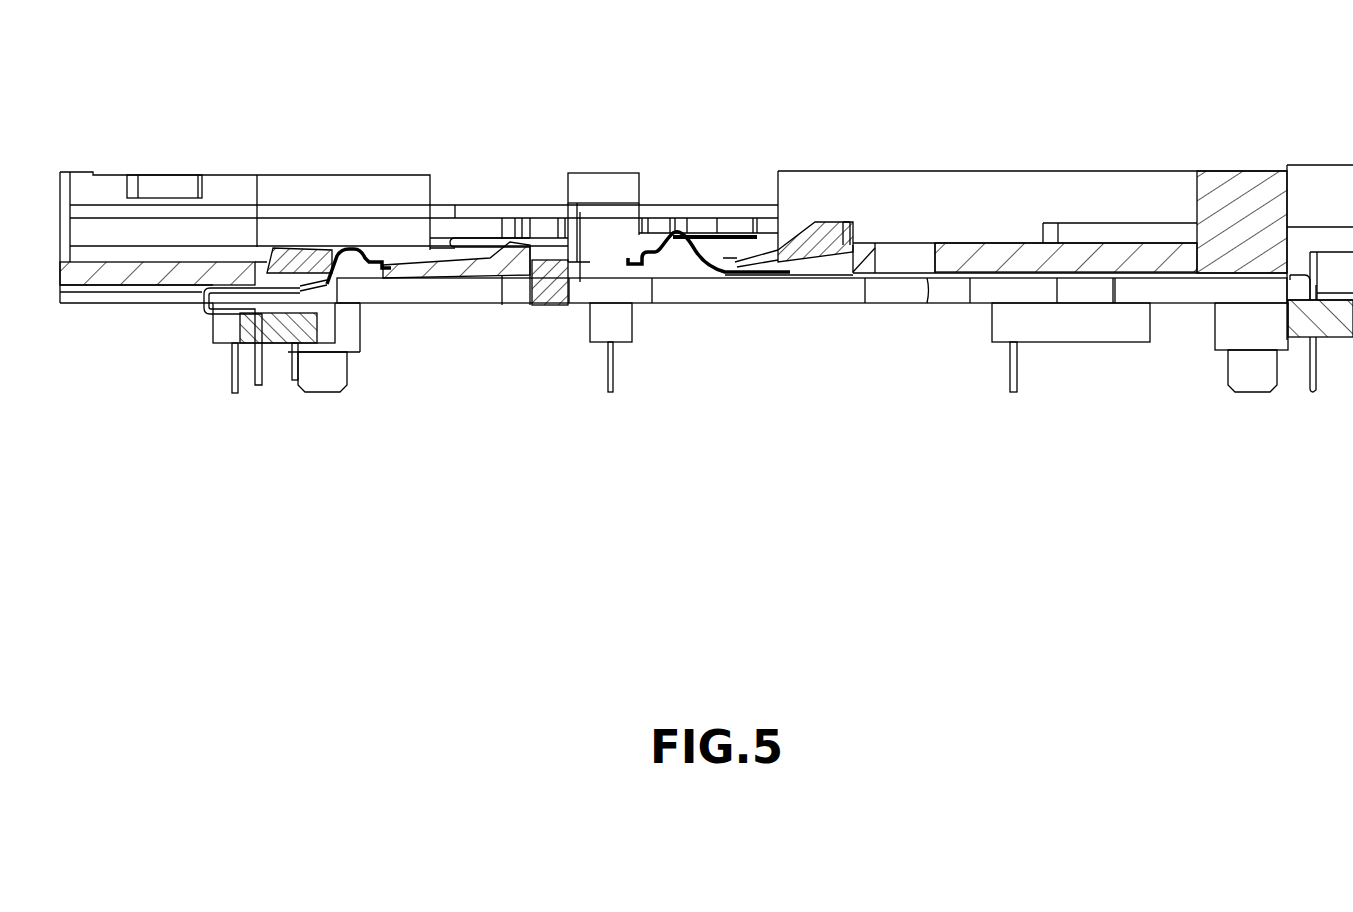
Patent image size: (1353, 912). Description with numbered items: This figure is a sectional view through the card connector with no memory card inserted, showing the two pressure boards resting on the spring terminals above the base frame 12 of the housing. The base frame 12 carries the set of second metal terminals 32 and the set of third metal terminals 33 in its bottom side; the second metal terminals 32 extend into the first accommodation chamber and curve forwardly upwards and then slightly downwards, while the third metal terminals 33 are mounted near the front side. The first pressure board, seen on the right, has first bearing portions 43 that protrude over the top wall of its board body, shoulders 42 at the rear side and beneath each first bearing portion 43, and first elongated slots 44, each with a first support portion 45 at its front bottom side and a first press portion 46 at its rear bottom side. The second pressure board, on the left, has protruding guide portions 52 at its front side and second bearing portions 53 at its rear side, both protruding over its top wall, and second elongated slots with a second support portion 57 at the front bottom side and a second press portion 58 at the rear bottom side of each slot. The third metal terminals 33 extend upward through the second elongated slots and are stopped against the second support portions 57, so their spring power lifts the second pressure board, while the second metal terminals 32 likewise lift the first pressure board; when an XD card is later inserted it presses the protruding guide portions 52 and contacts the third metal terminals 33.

The base frame 12 is at (478, 305).
The second metal terminals 32 is at (705, 243).
The third metal terminals 33 is at (347, 250).
The shoulders 42 is at (575, 303).
The first bearing portions 43 is at (833, 222).
The first elongated slots 44 is at (723, 252).
The first support portion 45 is at (630, 267).
The first press portion 46 is at (740, 270).
The protruding guide portions 52 is at (280, 247).
The second bearing portions 53 is at (515, 238).
The second support portion 57 is at (392, 270).
The second press portion 58 is at (327, 280).